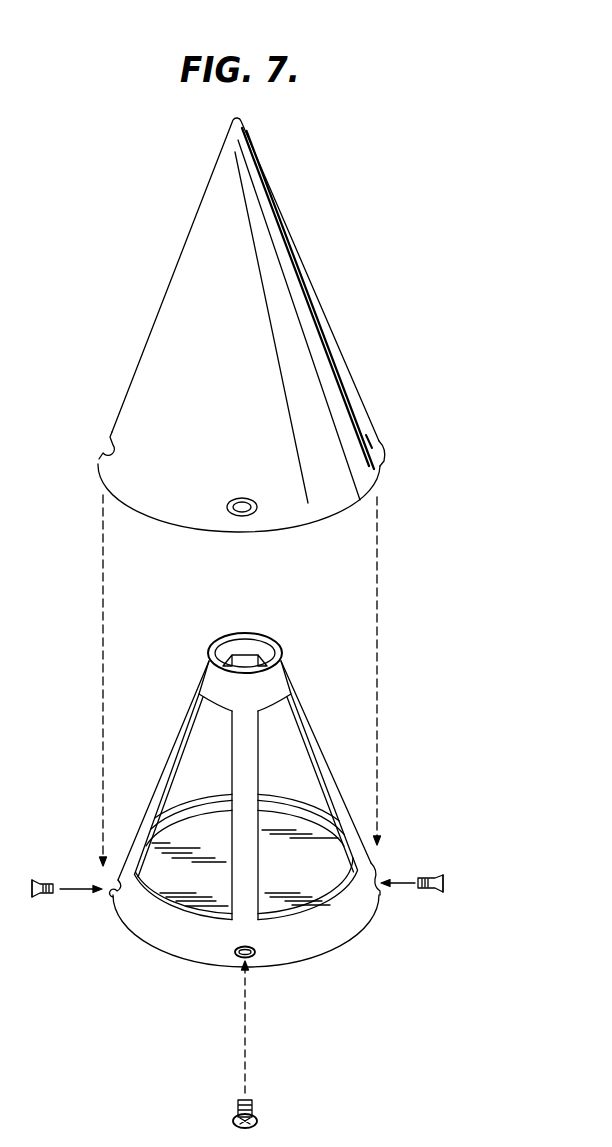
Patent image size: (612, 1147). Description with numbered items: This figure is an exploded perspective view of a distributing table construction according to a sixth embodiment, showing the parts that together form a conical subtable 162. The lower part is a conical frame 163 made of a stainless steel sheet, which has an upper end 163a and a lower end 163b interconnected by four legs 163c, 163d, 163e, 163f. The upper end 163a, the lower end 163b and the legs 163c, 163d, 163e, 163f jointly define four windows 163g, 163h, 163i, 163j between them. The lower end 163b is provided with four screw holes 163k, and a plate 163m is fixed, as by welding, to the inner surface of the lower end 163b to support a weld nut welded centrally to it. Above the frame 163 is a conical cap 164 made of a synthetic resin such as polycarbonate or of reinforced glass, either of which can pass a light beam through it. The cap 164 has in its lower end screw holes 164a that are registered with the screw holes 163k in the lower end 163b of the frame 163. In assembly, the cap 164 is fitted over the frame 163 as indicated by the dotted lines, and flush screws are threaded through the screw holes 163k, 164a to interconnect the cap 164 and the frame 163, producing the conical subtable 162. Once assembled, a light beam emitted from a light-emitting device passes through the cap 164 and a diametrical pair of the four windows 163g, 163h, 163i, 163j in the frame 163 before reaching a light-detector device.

The conical subtable 162 is at (316, 341).
The conical cap 164 is at (306, 319).
The screw holes 164a is at (437, 464).
The conical frame 163 is at (285, 792).
The upper end 163a is at (280, 682).
The lower end 163b is at (371, 904).
The leg 163c is at (168, 783).
The leg 163d is at (240, 888).
The leg 163e is at (306, 708).
The leg 163f is at (247, 652).
The window 163g is at (157, 859).
The window 163h is at (298, 783).
The window 163i is at (292, 746).
The window 163j is at (201, 751).
The screw holes 163k is at (256, 950).
The plate 163m is at (302, 893).